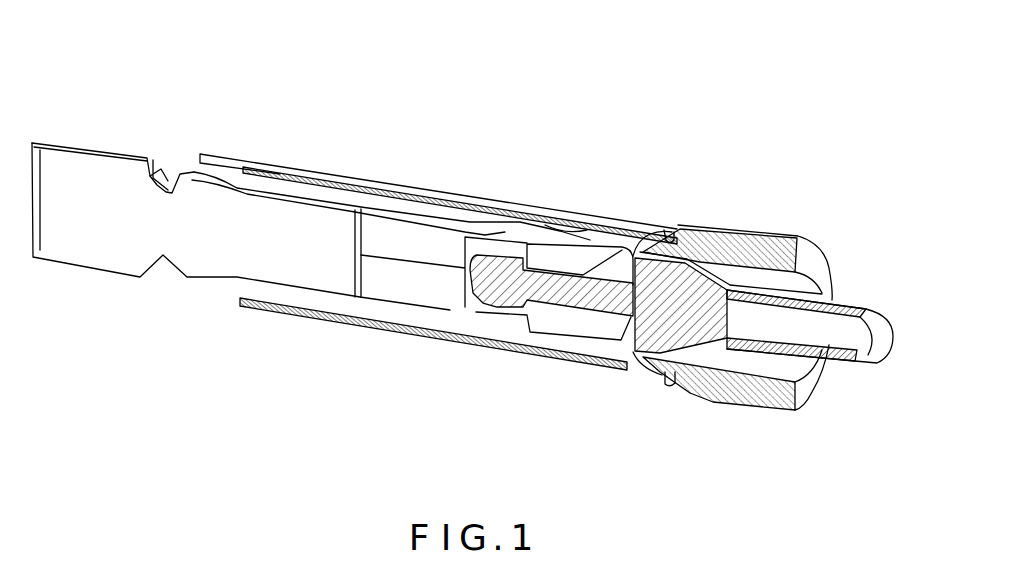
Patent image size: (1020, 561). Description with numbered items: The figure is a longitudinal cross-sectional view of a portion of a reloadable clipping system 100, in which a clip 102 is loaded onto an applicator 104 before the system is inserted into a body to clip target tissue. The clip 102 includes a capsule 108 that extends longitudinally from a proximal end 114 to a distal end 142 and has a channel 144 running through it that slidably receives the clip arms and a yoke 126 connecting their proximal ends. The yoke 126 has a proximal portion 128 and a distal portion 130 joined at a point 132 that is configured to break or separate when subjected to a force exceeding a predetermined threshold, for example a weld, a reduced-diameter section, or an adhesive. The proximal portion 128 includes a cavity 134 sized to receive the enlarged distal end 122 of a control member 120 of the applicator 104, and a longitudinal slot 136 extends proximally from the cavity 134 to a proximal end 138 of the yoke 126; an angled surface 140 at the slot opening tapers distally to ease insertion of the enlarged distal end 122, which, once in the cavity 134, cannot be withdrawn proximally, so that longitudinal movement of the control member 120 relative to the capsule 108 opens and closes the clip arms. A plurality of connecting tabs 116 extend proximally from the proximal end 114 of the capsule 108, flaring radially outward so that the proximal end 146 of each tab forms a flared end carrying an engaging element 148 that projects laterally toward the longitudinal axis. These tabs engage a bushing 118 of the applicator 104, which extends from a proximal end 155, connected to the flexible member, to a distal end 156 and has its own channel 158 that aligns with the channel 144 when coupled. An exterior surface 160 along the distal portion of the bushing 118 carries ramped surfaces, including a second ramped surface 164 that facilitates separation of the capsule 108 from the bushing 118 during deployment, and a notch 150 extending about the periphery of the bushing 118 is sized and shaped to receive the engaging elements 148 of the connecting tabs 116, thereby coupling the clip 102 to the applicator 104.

The reloadable clipping system 100 is at (429, 118).
The clip 102 is at (296, 108).
The applicator 104 is at (793, 198).
The capsule 108 is at (466, 202).
The proximal end of the capsule 114 is at (633, 355).
The connecting tabs 116 is at (637, 222).
The bushing 118 is at (747, 235).
The control member 120 is at (680, 297).
The enlarged distal end of the control member 122 is at (503, 266).
The yoke 126 is at (230, 258).
The proximal portion of the yoke 128 is at (372, 280).
The distal portion of the yoke 130 is at (70, 177).
The point 132 is at (157, 221).
The cavity 134 is at (476, 310).
The longitudinal slot 136 is at (534, 255).
The proximal end of the yoke 138 is at (605, 253).
The angled surface 140 is at (616, 315).
The distal end of the capsule 142 is at (226, 166).
The channel 144 is at (347, 202).
The proximal end of the connecting tab 146 is at (682, 228).
The engaging element 148 is at (666, 385).
The notch 150 is at (656, 383).
The proximal end of the bushing 155 is at (815, 258).
The distal end of the bushing 156 is at (662, 229).
The channel of the bushing 158 is at (766, 367).
The exterior surface 160 is at (727, 383).
The second ramped surface 164 is at (670, 378).